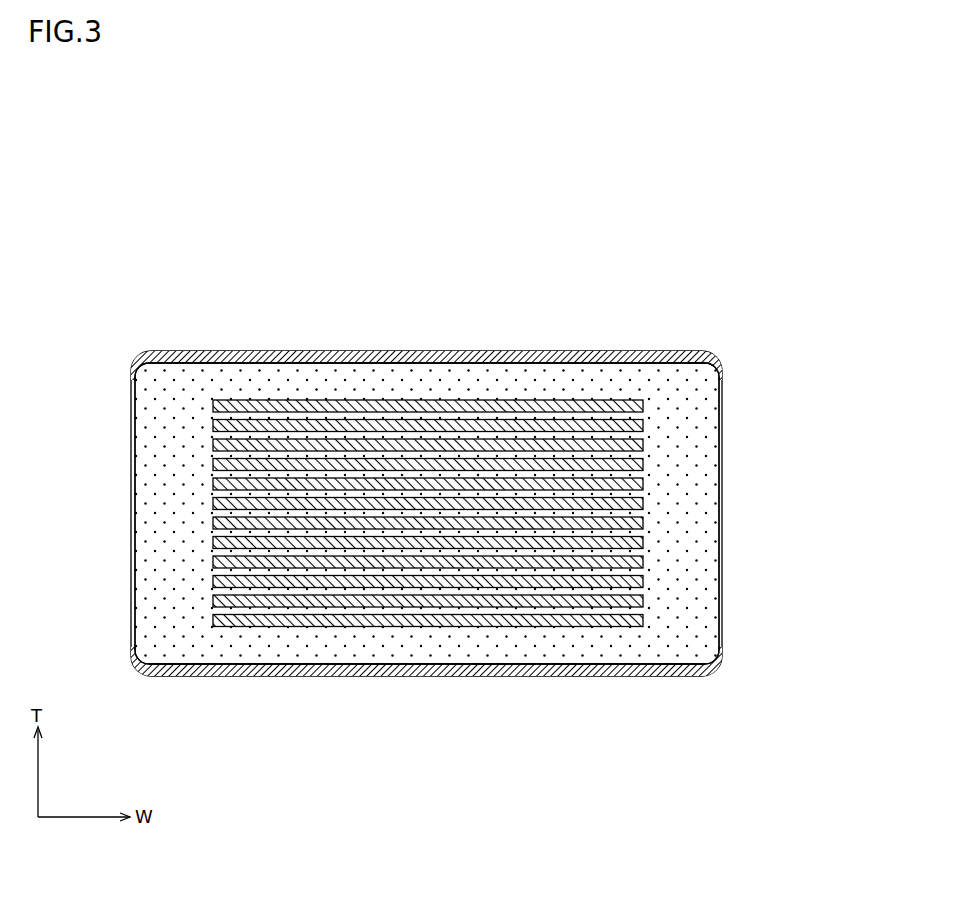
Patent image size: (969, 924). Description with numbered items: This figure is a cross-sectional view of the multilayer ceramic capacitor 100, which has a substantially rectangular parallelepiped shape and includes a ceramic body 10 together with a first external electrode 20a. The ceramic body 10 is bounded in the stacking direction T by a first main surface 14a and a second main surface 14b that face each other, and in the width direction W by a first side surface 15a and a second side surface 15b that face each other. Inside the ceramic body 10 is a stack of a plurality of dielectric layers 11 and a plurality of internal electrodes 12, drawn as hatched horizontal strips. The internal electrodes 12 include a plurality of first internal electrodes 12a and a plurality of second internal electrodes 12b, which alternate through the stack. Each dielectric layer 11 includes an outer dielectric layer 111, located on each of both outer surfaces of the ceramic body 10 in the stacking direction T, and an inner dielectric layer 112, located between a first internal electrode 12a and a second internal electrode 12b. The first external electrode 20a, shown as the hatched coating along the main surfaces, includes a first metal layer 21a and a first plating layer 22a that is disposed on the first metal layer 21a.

The multilayer ceramic capacitor 100 is at (410, 436).
The ceramic body 10 is at (722, 415).
The dielectric layer 11 is at (390, 249).
The outer dielectric layer 111 is at (371, 392).
The inner dielectric layer 112 is at (320, 415).
The internal electrode 12 is at (428, 511).
The first internal electrode 12a is at (527, 447).
The second internal electrode 12b is at (442, 588).
The first main surface 14a is at (224, 363).
The second main surface 14b is at (292, 676).
The first side surface 15a is at (135, 466).
The second side surface 15b is at (722, 500).
The first external electrode 20a is at (167, 351).
The first metal layer 21a is at (664, 351).
The first plating layer 22a is at (622, 351).